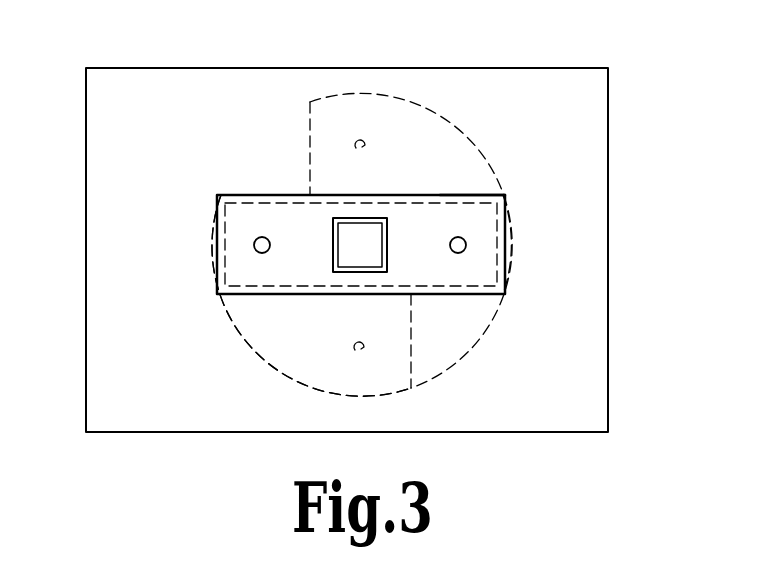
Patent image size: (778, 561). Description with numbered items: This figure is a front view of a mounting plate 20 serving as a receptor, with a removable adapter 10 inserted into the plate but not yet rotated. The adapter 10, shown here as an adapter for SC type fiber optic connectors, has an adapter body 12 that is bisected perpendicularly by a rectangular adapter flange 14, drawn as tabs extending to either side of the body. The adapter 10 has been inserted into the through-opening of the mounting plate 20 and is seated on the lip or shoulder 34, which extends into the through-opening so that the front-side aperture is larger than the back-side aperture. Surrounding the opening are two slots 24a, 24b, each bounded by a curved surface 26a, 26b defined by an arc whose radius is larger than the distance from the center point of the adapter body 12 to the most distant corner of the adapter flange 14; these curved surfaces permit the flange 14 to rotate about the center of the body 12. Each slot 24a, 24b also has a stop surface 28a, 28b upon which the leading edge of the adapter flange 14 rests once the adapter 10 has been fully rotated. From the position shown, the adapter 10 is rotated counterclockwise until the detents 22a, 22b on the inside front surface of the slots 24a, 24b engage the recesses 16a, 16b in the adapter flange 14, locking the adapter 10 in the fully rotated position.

The adapter 10 is at (412, 229).
The adapter body 12 is at (387, 258).
The adapter flange 14 is at (470, 195).
The recess 16a is at (466, 244).
The recess 16b is at (254, 245).
The mounting plate 20 is at (230, 157).
The detent 22a is at (358, 140).
The detent 22b is at (355, 350).
The slot 24a is at (418, 136).
The slot 24b is at (253, 323).
The curved surface 26a is at (483, 150).
The curved surface 26b is at (257, 360).
The stop surface 28a is at (310, 130).
The stop surface 28b is at (411, 353).
The shoulder 34 is at (513, 268).